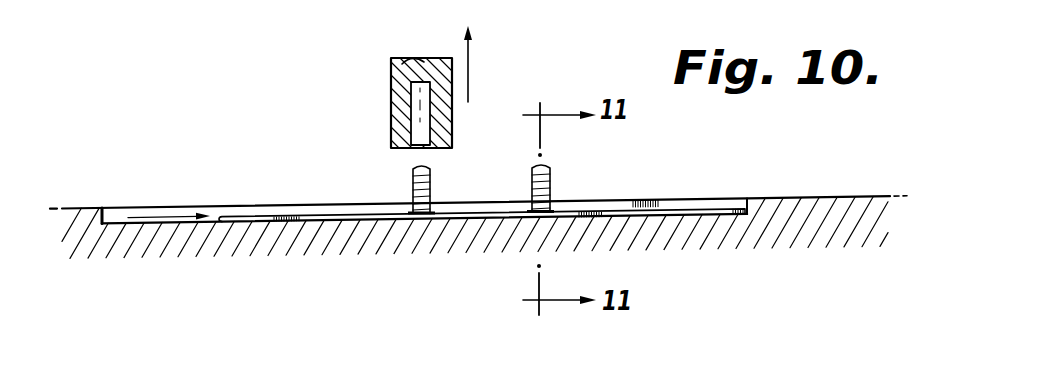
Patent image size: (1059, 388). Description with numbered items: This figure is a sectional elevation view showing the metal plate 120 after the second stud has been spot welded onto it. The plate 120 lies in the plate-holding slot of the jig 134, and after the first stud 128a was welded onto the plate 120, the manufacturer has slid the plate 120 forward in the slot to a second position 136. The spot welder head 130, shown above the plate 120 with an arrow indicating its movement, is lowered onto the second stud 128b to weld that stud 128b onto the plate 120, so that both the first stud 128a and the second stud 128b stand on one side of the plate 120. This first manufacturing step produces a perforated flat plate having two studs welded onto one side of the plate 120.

The plate 120 is at (268, 222).
The first stud 128a is at (551, 182).
The second stud 128b is at (411, 186).
The spot welder head 130 is at (391, 72).
The jig 134 is at (832, 211).
The second position 136 is at (143, 192).